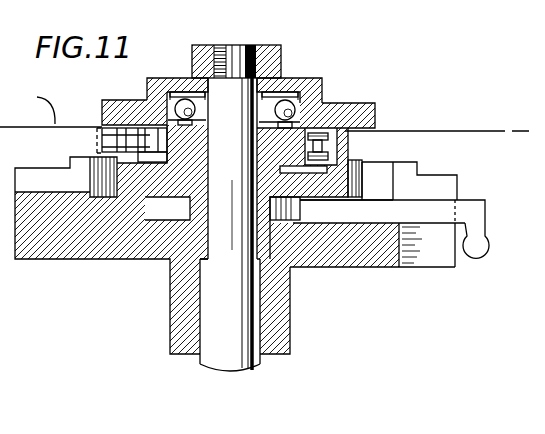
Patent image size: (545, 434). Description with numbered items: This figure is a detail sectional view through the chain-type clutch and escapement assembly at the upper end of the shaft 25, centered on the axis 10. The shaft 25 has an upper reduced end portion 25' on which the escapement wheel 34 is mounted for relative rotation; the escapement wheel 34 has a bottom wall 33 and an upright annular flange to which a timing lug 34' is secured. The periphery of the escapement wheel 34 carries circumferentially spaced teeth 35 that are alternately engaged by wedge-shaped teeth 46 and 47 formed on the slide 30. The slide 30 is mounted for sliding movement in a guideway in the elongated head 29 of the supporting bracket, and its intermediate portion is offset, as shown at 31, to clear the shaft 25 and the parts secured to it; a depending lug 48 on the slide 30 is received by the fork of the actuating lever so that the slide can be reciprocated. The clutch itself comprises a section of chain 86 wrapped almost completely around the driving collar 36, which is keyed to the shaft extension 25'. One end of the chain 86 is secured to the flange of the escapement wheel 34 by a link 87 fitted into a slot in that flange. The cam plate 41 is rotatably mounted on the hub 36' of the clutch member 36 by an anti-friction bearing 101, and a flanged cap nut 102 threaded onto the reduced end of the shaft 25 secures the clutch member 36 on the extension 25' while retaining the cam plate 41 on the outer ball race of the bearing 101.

The axis of rotation 10 is at (490, 131).
The shaft 25 is at (206, 218).
The upper reduced end portion of the shaft 25' is at (247, 42).
The elongated head 29 is at (372, 265).
The slide 30 is at (440, 204).
The offset portion of the slide 31 is at (282, 222).
The bottom wall 33 is at (311, 190).
The escapement wheel 34 is at (343, 182).
The timing lug 34' is at (81, 126).
The teeth 35 is at (354, 172).
The driving collar 36 is at (184, 107).
The hub of the clutch member 36' is at (224, 71).
The cam plate 41 is at (370, 108).
The wedge-shaped tooth 46 is at (97, 186).
The wedge-shaped tooth 47 is at (384, 201).
The depending lug 48 is at (488, 236).
The chain 86 is at (322, 147).
The link 87 is at (110, 141).
The anti-friction bearing 101 is at (323, 90).
The flanged cap nut 102 is at (284, 64).